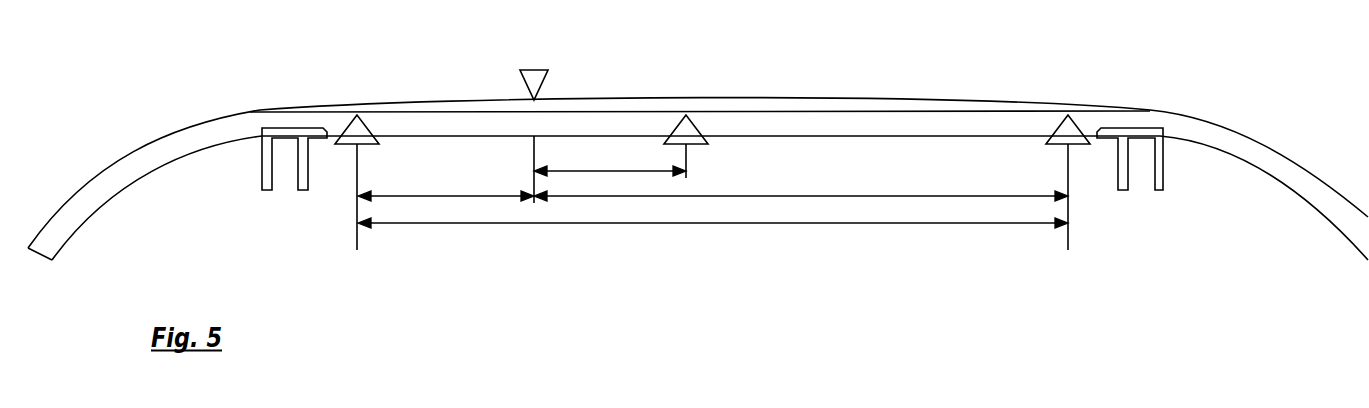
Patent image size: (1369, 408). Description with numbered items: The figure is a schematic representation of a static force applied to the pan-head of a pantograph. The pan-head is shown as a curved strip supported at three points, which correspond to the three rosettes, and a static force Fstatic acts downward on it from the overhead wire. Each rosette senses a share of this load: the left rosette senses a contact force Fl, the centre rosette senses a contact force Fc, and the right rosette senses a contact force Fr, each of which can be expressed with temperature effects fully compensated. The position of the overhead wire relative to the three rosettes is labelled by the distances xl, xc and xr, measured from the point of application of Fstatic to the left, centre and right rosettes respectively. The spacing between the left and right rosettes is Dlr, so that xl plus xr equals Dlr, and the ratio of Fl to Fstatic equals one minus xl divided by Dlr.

The contact force sensed by the left rosette Fl is at (357, 152).
The static force Fstatic is at (538, 114).
The contact force sensed by the centre rosette Fc is at (686, 118).
The contact force sensed by the right rosette Fr is at (1068, 154).
The distance of the overhead wire from the left rosette xl is at (446, 176).
The distance of the overhead wire from the centre rosette xc is at (610, 153).
The distance of the overhead wire from the right rosette xr is at (801, 175).
The distance between the left and right rosettes Dlr is at (713, 239).